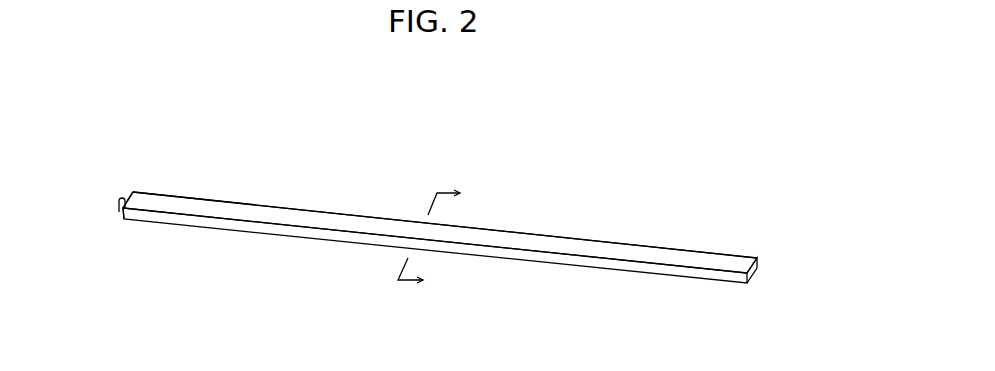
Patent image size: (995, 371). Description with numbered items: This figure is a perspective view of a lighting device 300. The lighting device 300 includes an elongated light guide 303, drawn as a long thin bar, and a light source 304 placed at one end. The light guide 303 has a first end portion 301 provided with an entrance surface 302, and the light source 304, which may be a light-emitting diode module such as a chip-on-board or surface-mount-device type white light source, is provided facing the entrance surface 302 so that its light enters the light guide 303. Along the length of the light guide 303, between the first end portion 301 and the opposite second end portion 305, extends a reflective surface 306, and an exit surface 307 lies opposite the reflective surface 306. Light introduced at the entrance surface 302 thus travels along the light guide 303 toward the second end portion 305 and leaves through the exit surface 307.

The lighting device 300 is at (652, 142).
The first end portion 301 is at (126, 222).
The entrance surface 302 is at (131, 194).
The light guide 303 is at (390, 221).
The light source 304 is at (118, 205).
The second end portion 305 is at (735, 283).
The reflective surface 306 is at (555, 234).
The exit surface 307 is at (360, 241).